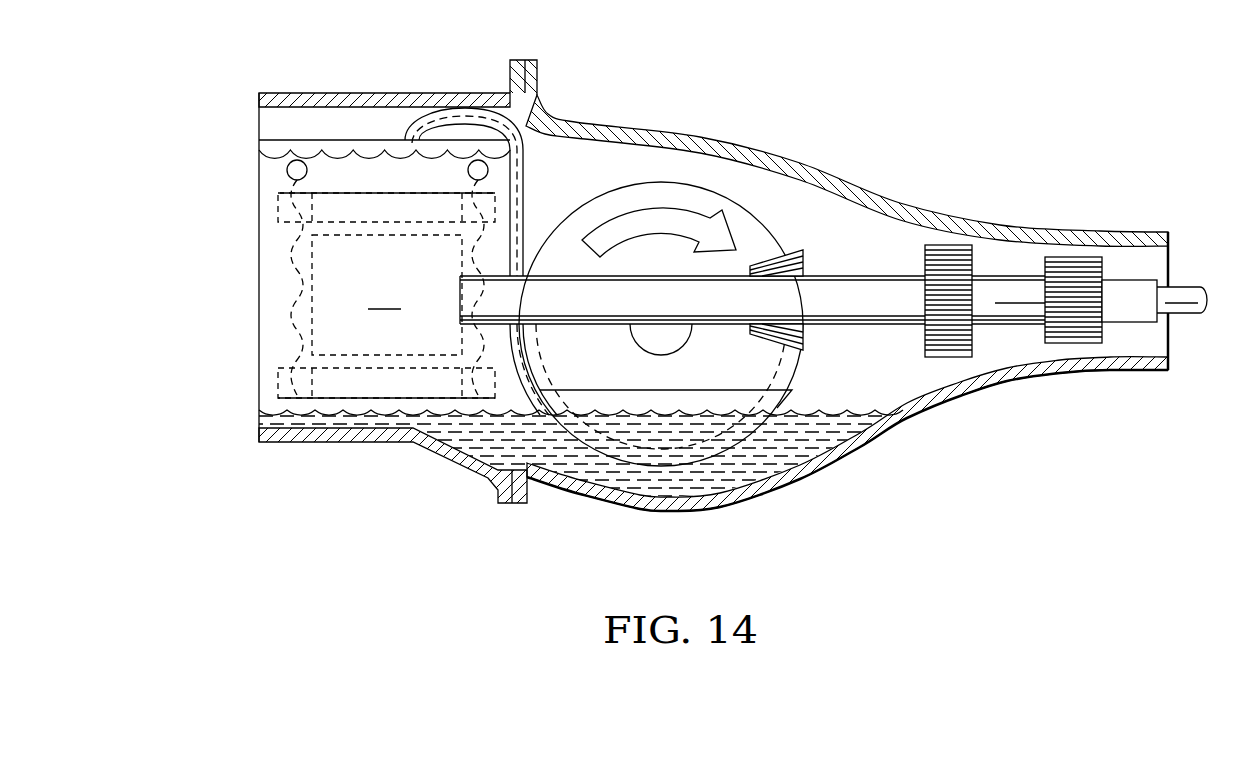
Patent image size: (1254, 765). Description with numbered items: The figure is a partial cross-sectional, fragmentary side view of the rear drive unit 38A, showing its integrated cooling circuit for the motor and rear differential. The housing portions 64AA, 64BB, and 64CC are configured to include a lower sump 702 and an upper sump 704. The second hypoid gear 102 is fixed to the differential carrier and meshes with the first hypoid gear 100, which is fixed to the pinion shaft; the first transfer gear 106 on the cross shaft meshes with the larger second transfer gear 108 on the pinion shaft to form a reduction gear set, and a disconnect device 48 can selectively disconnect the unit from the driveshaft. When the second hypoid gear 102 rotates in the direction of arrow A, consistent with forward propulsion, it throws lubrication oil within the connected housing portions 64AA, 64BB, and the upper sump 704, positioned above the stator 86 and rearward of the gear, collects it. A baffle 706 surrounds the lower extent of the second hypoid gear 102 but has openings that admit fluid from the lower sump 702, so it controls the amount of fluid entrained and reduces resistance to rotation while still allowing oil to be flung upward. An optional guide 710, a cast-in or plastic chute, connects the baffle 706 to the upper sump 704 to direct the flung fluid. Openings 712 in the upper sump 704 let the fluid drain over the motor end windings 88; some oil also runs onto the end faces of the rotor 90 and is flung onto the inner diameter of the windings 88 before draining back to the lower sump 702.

The housing portion 64BB is at (375, 93).
The upper sump 704 is at (345, 172).
The openings 712 is at (302, 182).
The guide 710 is at (535, 150).
The second hypoid gear 102 is at (638, 182).
The arrow A is at (660, 207).
The housing portion 64AA is at (775, 150).
The rear drive unit 38A is at (933, 104).
The first hypoid gear 100 is at (793, 252).
The second transfer gear 108 is at (947, 245).
The first transfer gear 106 is at (950, 273).
The disconnect device 48 is at (1073, 345).
The stator 86 is at (332, 208).
The motor end windings 88 is at (273, 210).
The housing portion 64CC is at (259, 222).
The rotor 90 is at (283, 365).
The lower sump 702 is at (653, 473).
The baffle 706 is at (740, 447).